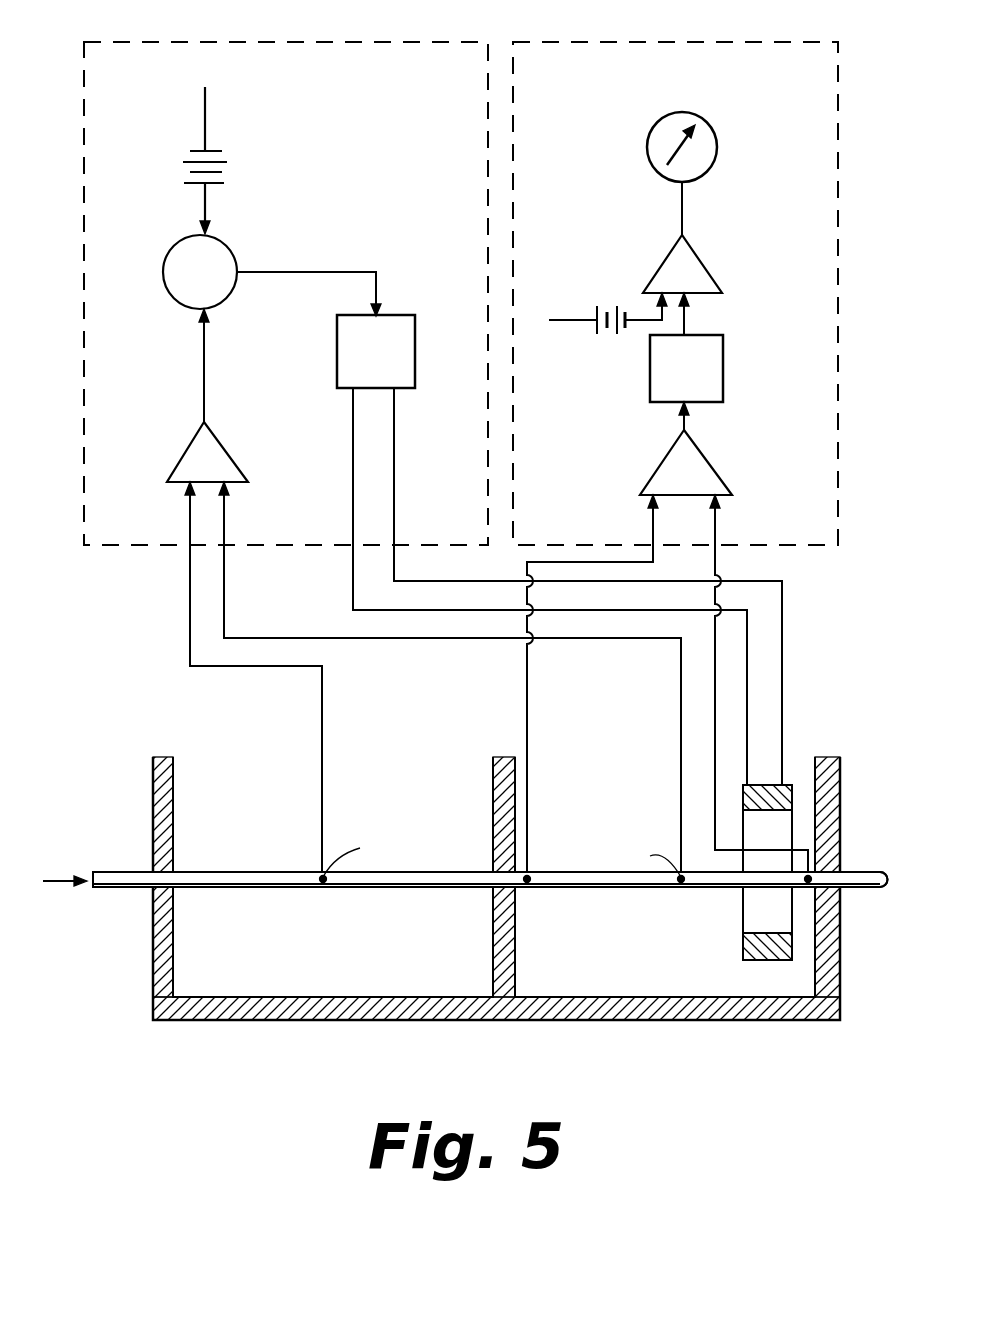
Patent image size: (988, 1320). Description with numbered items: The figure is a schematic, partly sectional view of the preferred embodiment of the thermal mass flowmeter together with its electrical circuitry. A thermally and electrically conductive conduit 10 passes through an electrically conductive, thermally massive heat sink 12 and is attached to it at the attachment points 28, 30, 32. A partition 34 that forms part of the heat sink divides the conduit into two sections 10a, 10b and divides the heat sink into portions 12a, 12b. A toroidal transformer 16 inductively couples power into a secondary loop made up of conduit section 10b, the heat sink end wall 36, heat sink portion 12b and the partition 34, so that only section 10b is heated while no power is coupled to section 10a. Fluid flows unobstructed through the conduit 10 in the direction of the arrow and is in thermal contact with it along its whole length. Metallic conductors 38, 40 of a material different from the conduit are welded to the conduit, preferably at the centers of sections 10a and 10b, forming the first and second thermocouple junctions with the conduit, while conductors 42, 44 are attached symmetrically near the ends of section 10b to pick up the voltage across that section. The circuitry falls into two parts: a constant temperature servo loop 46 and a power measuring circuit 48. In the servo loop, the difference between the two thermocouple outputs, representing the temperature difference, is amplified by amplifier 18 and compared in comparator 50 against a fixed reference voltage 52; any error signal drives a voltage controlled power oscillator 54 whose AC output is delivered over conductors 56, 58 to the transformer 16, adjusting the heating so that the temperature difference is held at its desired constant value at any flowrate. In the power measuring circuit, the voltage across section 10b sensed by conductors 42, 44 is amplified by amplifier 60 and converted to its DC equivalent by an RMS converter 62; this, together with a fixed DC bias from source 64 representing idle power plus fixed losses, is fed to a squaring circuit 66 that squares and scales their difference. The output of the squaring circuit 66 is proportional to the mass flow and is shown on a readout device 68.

The conduit 10 is at (490, 860).
The conduit section 10a is at (367, 888).
The conduit section 10b is at (575, 888).
The heat sink 12 is at (480, 915).
The heat sink portion 12a is at (347, 1020).
The heat sink portion 12b is at (630, 1020).
The toroidal transformer 16 is at (743, 945).
The amplifier 18 is at (225, 440).
The attachment point 28 is at (175, 870).
The attachment point 30 is at (493, 897).
The attachment point 32 is at (862, 890).
The partition 34 is at (515, 940).
The heat sink end wall 36 is at (840, 955).
The metallic conductor 38 is at (322, 757).
The metallic conductor 40 is at (681, 735).
The conductor 42 is at (527, 697).
The conductor 44 is at (717, 670).
The constant temperature servo loop 46 is at (270, 44).
The power measuring circuit 48 is at (692, 44).
The comparator 50 is at (232, 250).
The fixed reference voltage 52 is at (232, 167).
The voltage controlled power oscillator 54 is at (395, 316).
The conductor 56 is at (747, 685).
The conductor 58 is at (782, 640).
The amplifier 60 is at (712, 465).
The RMS converter 62 is at (723, 360).
The fixed DC voltage source 64 is at (597, 333).
The squaring circuit 66 is at (705, 268).
The readout device 68 is at (717, 135).